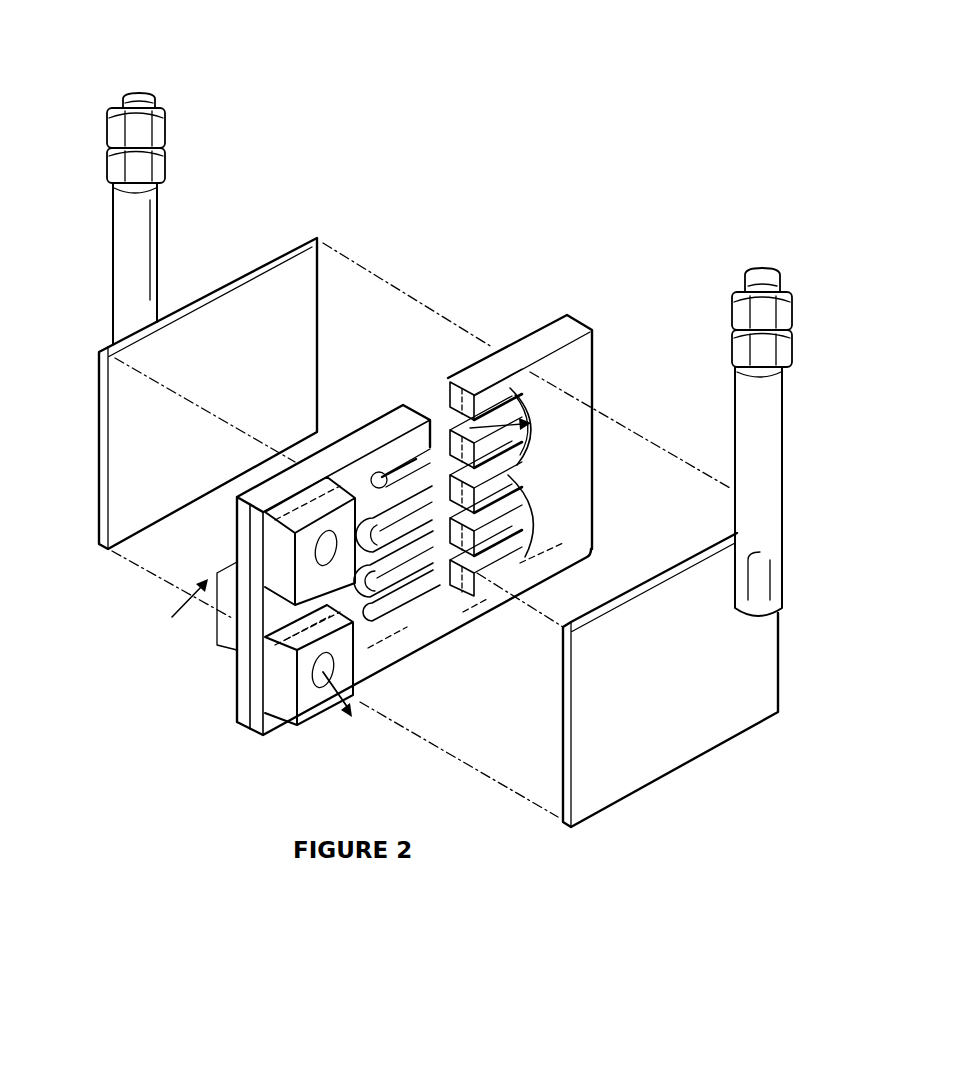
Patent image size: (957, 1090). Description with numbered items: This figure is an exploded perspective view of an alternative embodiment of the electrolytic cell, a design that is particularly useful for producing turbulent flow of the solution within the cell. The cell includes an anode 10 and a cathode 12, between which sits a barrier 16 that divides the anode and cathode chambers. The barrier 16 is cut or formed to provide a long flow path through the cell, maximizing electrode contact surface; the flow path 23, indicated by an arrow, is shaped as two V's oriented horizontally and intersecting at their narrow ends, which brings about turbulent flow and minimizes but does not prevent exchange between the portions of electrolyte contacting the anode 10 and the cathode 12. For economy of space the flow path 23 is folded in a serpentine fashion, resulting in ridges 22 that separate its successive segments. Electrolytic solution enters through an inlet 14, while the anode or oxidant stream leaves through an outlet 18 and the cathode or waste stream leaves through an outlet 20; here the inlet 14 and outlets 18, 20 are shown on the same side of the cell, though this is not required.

The anode 10 is at (770, 648).
The cathode 12 is at (265, 285).
The inlet 14 is at (328, 552).
The barrier 16 is at (583, 370).
The outlet for the anode or oxidant stream 18 is at (345, 712).
The outlet for the cathode or waste stream 20 is at (175, 608).
The ridges 22 is at (505, 476).
The flow path 23 is at (432, 390).